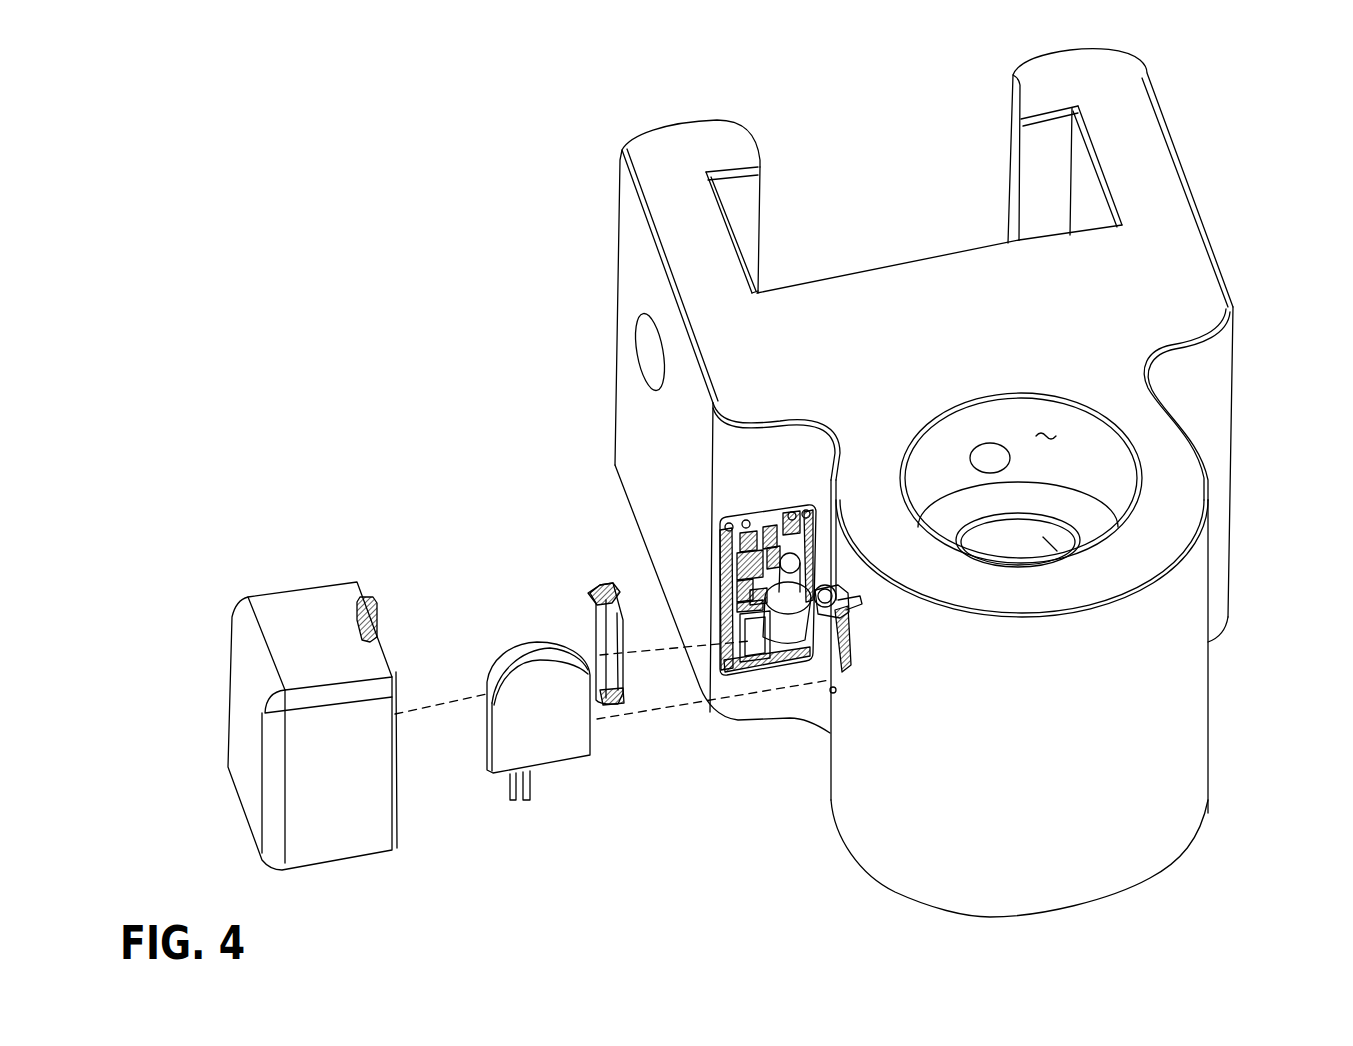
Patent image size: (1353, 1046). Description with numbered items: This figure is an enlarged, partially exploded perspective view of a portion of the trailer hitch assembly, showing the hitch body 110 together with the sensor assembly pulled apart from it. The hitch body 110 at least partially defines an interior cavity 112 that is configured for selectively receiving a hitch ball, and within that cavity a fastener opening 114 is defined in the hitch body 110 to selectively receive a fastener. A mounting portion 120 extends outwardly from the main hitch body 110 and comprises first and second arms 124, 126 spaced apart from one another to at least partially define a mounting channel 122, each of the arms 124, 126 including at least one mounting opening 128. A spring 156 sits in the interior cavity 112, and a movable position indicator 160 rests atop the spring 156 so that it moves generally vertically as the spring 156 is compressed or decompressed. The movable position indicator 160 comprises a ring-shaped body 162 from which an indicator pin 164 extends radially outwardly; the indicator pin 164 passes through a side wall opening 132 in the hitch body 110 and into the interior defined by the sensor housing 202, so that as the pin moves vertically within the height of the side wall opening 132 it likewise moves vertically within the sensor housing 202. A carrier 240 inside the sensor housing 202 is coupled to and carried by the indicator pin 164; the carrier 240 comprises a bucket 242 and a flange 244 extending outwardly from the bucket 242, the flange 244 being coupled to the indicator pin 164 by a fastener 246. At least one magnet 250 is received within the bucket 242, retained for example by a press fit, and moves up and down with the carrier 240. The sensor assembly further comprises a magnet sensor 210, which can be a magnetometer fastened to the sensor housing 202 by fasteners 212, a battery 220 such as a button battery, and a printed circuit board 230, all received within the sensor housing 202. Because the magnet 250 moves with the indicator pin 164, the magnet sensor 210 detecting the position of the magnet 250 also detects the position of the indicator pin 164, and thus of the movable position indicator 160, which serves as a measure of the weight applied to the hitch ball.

The hitch body 110 is at (897, 890).
The interior cavity 112 is at (1046, 435).
The fastener opening 114 is at (983, 447).
The mounting portion 120 is at (620, 513).
The mounting channel 122 is at (727, 217).
The first arm 124 is at (677, 214).
The second arm 126 is at (1118, 118).
The mounting opening 128 is at (640, 350).
The side wall opening 132 is at (833, 695).
The spring 156 is at (1043, 537).
The movable position indicator 160 is at (1112, 503).
The ring-shaped body 162 is at (1067, 507).
The indicator pin 164 is at (851, 650).
The sensor housing 202 is at (245, 734).
The magnet sensor 210 is at (600, 592).
The fasteners 212 is at (587, 597).
The battery 220 is at (562, 762).
The printed circuit board 230 is at (757, 500).
The carrier 240 is at (833, 690).
The bucket 242 is at (788, 625).
The flange 244 is at (845, 612).
The fastener 246 is at (800, 510).
The magnet 250 is at (712, 597).